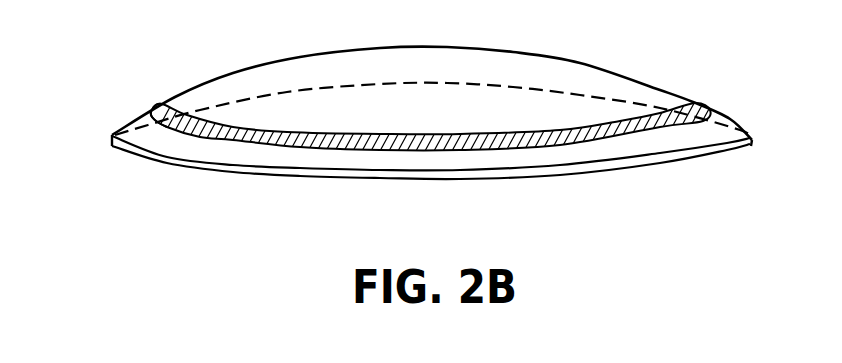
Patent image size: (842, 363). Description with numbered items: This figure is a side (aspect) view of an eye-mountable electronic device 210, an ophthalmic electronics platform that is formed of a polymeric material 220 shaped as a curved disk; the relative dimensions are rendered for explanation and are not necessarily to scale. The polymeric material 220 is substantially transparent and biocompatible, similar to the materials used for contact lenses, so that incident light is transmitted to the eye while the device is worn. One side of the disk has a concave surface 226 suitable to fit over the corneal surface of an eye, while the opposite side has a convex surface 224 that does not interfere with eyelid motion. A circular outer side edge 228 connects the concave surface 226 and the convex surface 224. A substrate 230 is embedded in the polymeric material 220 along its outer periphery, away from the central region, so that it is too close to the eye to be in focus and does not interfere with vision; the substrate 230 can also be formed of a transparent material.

The eye-mountable electronic device 210 is at (201, 47).
The polymeric material 220 is at (439, 158).
The convex surface 224 is at (663, 85).
The concave surface 226 is at (677, 150).
The circular outer side edge 228 is at (577, 175).
The substrate 230 is at (160, 112).